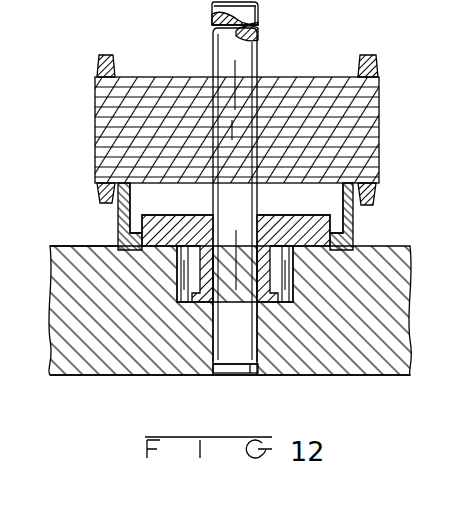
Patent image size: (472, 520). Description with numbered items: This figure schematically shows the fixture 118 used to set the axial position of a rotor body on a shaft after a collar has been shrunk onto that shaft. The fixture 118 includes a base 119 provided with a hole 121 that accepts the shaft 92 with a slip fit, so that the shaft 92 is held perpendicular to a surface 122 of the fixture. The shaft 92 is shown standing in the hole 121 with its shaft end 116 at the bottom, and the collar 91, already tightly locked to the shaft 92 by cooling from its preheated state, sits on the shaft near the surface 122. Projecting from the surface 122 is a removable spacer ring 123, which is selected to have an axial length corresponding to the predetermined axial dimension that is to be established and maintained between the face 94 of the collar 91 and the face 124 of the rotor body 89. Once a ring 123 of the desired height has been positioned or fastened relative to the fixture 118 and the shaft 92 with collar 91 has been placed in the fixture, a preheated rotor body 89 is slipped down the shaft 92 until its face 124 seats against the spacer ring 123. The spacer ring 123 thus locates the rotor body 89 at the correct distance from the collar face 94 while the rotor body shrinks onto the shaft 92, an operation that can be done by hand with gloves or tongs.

The rotor body 89 is at (380, 118).
The collar 91 is at (170, 217).
The shaft 92 is at (243, 53).
The face 94 is at (290, 305).
The shaft end 116 is at (237, 365).
The fixture 118 is at (83, 240).
The base 119 is at (357, 365).
The hole 121 is at (252, 368).
The surface 122 is at (380, 245).
The removable spacer ring 123 is at (357, 212).
The face 124 is at (327, 187).